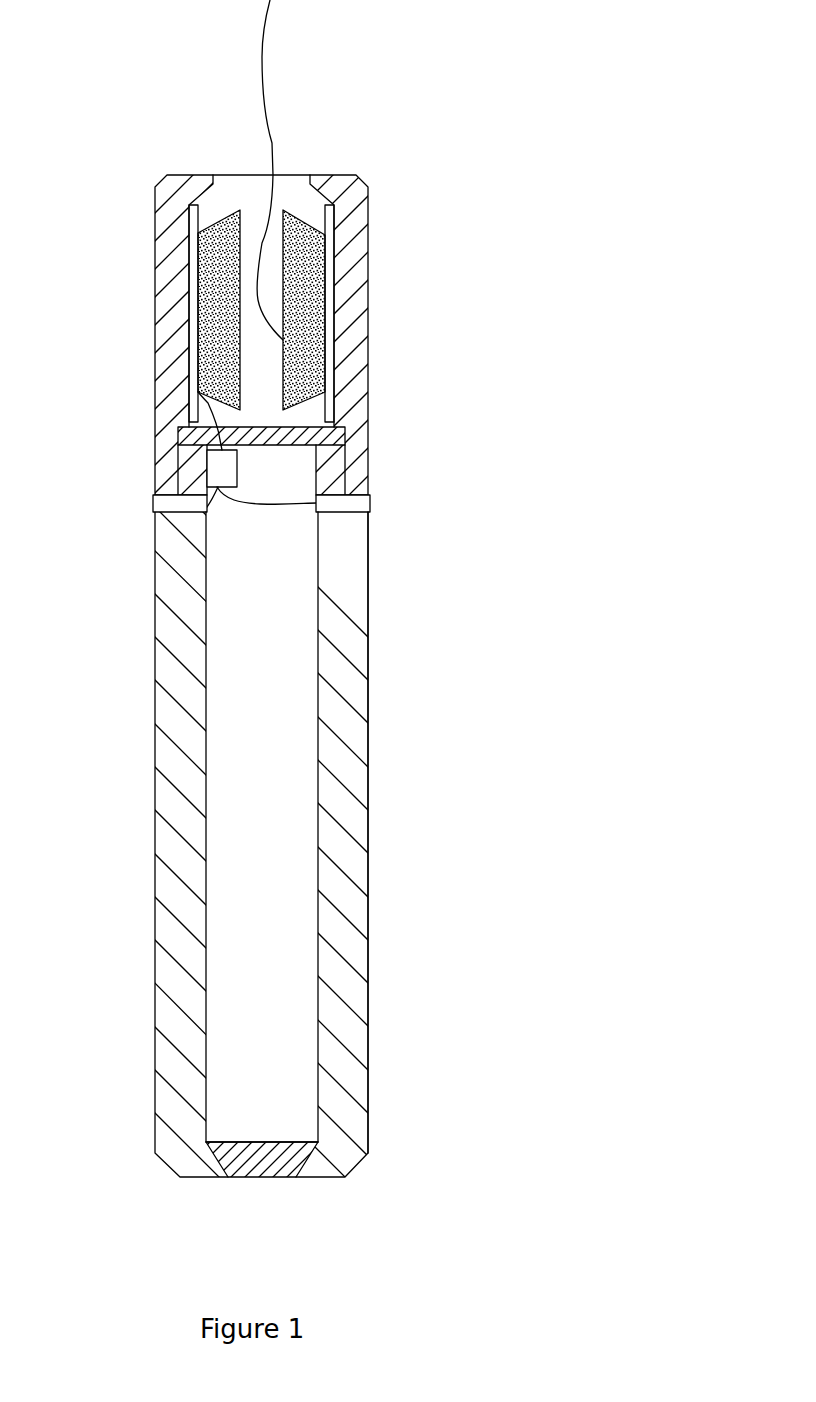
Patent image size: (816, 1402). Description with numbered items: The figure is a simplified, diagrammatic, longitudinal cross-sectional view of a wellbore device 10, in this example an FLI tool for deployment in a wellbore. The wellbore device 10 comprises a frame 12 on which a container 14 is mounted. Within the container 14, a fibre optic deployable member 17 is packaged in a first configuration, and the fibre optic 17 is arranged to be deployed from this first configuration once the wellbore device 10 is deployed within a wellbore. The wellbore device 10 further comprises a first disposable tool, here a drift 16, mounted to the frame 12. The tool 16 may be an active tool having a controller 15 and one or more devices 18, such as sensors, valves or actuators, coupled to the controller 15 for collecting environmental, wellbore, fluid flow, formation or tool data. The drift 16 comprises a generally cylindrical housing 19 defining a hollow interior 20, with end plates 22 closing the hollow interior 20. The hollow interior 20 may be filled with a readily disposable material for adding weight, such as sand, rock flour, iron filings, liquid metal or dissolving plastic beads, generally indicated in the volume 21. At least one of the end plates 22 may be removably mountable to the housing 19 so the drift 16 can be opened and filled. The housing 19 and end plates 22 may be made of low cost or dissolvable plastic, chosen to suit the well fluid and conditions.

The wellbore device 10 is at (127, 586).
The frame 12 is at (368, 240).
The container 14 is at (338, 318).
The controller 15 is at (218, 478).
The drift 16 is at (368, 713).
The fibre optic deployable member 17 is at (263, 56).
The devices 18 is at (435, 517).
The housing 19 is at (368, 602).
The hollow interior 20 is at (317, 860).
The volume 21 is at (280, 943).
The end plates 22 is at (268, 445).